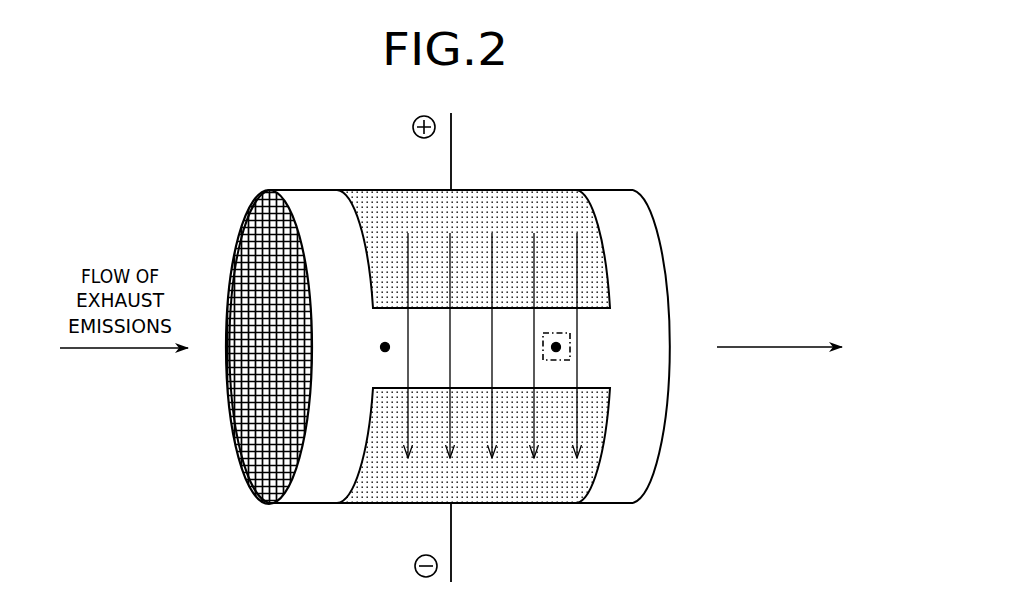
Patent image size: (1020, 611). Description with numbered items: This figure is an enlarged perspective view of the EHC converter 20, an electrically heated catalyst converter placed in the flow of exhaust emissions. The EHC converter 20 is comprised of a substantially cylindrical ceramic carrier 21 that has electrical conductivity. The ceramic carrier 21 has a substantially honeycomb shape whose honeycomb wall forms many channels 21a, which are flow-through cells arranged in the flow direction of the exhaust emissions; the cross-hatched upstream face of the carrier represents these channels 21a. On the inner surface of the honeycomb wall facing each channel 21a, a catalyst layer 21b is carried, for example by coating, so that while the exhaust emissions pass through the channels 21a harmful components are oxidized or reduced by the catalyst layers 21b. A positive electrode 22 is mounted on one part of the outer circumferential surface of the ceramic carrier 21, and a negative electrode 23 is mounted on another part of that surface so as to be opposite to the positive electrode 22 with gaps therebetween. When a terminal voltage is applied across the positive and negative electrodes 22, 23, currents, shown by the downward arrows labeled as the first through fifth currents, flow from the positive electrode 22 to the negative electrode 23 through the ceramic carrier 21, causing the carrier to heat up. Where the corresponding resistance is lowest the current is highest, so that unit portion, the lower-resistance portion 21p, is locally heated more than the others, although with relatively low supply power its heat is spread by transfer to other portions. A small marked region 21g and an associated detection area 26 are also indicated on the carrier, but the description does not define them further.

The EHC converter 20 is at (435, 347).
The ceramic carrier 21 is at (403, 318).
The channels 21a is at (247, 212).
The catalyst layer 21b is at (238, 237).
The lower-resistance portion 21p is at (385, 347).
The measurement point on carrier 21g is at (556, 347).
The positive electrode 22 is at (367, 205).
The negative electrode 23 is at (373, 493).
The detection region 26 is at (566, 333).